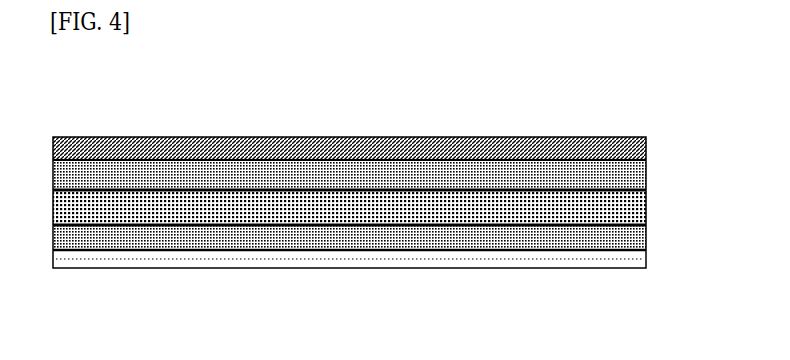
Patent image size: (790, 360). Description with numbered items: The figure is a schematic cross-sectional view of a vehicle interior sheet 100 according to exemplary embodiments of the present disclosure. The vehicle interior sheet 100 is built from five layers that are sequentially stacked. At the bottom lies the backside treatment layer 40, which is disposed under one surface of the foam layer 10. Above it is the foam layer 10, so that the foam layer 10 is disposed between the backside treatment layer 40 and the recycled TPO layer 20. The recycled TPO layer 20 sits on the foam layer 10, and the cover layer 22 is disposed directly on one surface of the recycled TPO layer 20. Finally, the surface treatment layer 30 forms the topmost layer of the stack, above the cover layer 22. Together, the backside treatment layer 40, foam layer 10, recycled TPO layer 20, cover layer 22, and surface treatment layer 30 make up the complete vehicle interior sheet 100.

The vehicle interior sheet 100 is at (356, 112).
The surface treatment layer 30 is at (648, 136).
The cover layer 22 is at (648, 172).
The recycled TPO layer 20 is at (647, 208).
The foam layer 10 is at (647, 245).
The backside treatment layer 40 is at (647, 270).